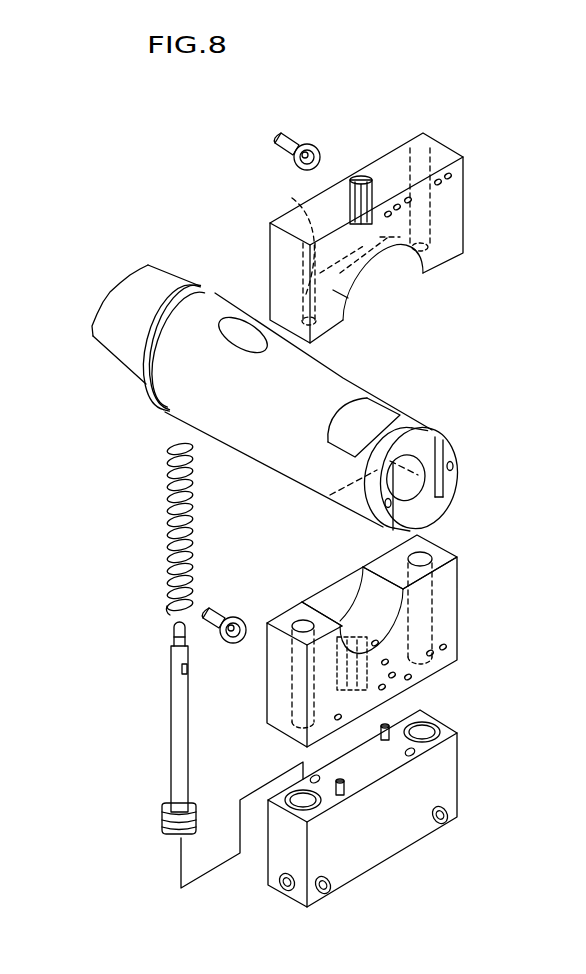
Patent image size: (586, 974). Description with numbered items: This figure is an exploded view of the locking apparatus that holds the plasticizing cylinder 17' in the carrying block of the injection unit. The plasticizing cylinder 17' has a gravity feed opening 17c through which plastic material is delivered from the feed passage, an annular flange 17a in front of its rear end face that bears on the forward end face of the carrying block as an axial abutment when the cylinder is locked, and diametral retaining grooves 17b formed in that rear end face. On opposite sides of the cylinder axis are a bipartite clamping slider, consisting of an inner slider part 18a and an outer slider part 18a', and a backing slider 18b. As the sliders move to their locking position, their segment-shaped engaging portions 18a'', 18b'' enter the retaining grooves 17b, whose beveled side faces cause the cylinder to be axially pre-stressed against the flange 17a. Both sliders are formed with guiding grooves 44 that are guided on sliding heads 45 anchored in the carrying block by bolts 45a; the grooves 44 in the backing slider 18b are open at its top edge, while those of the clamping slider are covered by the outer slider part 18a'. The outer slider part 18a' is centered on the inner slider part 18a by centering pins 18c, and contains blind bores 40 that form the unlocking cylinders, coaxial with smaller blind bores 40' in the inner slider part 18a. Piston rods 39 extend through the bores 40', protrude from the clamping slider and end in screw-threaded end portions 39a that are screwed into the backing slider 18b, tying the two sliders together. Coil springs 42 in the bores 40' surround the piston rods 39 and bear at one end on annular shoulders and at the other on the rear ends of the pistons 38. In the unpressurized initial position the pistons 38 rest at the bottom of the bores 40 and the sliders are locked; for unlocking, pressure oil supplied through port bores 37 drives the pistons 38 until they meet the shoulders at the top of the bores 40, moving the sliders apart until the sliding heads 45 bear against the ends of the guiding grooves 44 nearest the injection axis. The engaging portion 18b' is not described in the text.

The plasticizing cylinder 17' is at (315, 419).
The annular flange 17a is at (160, 348).
The retaining grooves 17b is at (378, 410).
The gravity feed opening 17c is at (237, 342).
The inner slider part 18a is at (335, 641).
The outer slider part 18a' is at (397, 719).
The engaging portion 18a'' is at (370, 582).
The backing slider 18b is at (336, 238).
The bore in upper block 18b' is at (284, 235).
The engaging portion 18b'' is at (414, 281).
The centering pins 18c is at (390, 727).
The port bores 37 is at (325, 890).
The pistons 38 is at (166, 835).
The piston rods 39 is at (178, 765).
The screw-threaded end portions 39a is at (175, 641).
The blind bores 40 is at (449, 723).
The blind bores 40' is at (465, 608).
The coil springs 42 is at (169, 500).
The guiding grooves 44 is at (351, 182).
The sliding heads 45 is at (307, 147).
The bolts 45a is at (279, 138).